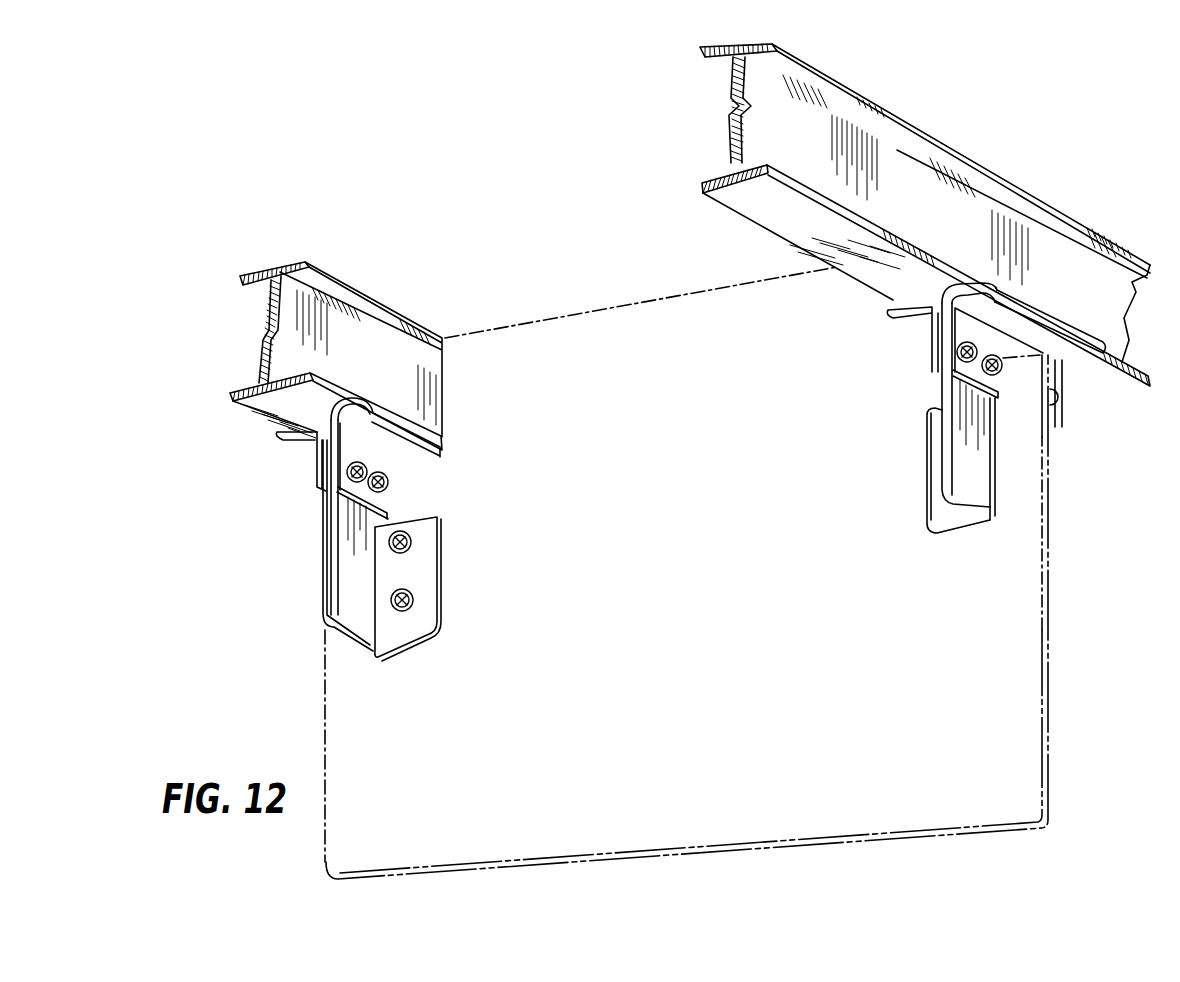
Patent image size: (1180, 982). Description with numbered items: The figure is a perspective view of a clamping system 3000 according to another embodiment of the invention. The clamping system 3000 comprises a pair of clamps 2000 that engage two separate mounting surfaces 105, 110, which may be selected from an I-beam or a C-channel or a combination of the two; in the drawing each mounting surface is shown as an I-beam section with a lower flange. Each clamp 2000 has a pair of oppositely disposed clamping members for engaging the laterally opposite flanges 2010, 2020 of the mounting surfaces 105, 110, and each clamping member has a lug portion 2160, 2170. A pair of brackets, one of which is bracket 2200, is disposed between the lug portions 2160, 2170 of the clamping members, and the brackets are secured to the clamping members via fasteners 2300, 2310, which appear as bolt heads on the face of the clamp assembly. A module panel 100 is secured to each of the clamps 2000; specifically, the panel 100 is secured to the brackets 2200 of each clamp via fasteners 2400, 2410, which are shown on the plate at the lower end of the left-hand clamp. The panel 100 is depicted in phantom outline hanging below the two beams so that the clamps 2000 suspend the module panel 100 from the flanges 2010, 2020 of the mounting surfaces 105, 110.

The module panel 100 is at (1003, 696).
The mounting surface 105 is at (262, 388).
The mounting surface 110 is at (787, 147).
The clamp 2000 is at (312, 576).
The flange 2010 is at (245, 410).
The flange 2020 is at (313, 393).
The lug portion 2160 is at (307, 450).
The lug portion 2170 is at (407, 452).
The bracket 2200 is at (348, 588).
The fastener 2300 is at (355, 478).
The fastener 2310 is at (388, 482).
The fastener 2400 is at (412, 603).
The fastener 2410 is at (417, 538).
The clamping system 3000 is at (535, 272).